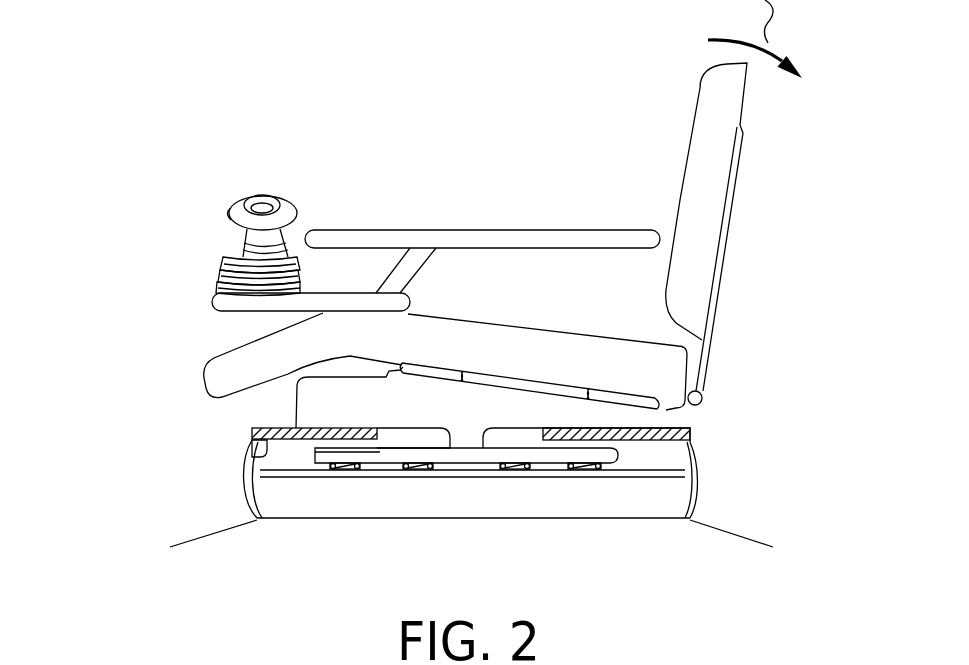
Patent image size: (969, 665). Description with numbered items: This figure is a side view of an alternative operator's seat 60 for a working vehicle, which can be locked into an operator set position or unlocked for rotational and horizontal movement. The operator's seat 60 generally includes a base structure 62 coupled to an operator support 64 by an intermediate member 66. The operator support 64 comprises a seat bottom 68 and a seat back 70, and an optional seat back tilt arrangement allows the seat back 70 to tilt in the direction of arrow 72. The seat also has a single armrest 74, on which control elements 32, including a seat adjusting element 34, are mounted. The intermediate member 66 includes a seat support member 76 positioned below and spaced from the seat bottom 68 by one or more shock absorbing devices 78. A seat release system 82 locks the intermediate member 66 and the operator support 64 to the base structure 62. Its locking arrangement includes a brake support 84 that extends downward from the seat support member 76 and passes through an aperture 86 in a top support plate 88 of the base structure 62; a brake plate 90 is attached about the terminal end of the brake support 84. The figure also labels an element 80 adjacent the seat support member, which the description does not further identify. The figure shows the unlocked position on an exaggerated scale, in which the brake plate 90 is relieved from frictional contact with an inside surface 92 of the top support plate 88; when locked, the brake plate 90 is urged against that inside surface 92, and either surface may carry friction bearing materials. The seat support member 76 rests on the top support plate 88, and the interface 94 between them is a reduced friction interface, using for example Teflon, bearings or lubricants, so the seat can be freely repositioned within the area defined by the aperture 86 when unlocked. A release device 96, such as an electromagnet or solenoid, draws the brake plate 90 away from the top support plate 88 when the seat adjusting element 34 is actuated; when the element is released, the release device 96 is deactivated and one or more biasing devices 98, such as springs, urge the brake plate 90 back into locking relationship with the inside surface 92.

The operator's seat 60 is at (360, 41).
The control elements 32 is at (280, 196).
The seat adjusting element 34 is at (233, 212).
The armrest 74 is at (510, 230).
The seat back 70 is at (688, 144).
The operator support 64 is at (769, 266).
The seat bottom 68 is at (630, 345).
The shock absorbing devices 78 is at (447, 378).
The intermediate member 66 is at (266, 390).
The brake support 84 is at (465, 445).
The aperture 86 is at (419, 413).
The seat mount plate 80 is at (568, 402).
The seat support member 76 is at (623, 412).
The top support plate 88 is at (252, 434).
The interface 94 is at (270, 428).
The inside surface 92 is at (247, 456).
The brake plate 90 is at (618, 458).
The biasing devices 98 is at (340, 470).
The release device 96 is at (502, 513).
The base structure 62 is at (209, 490).
The seat release system 82 is at (743, 488).
The arrow 72 is at (765, 664).